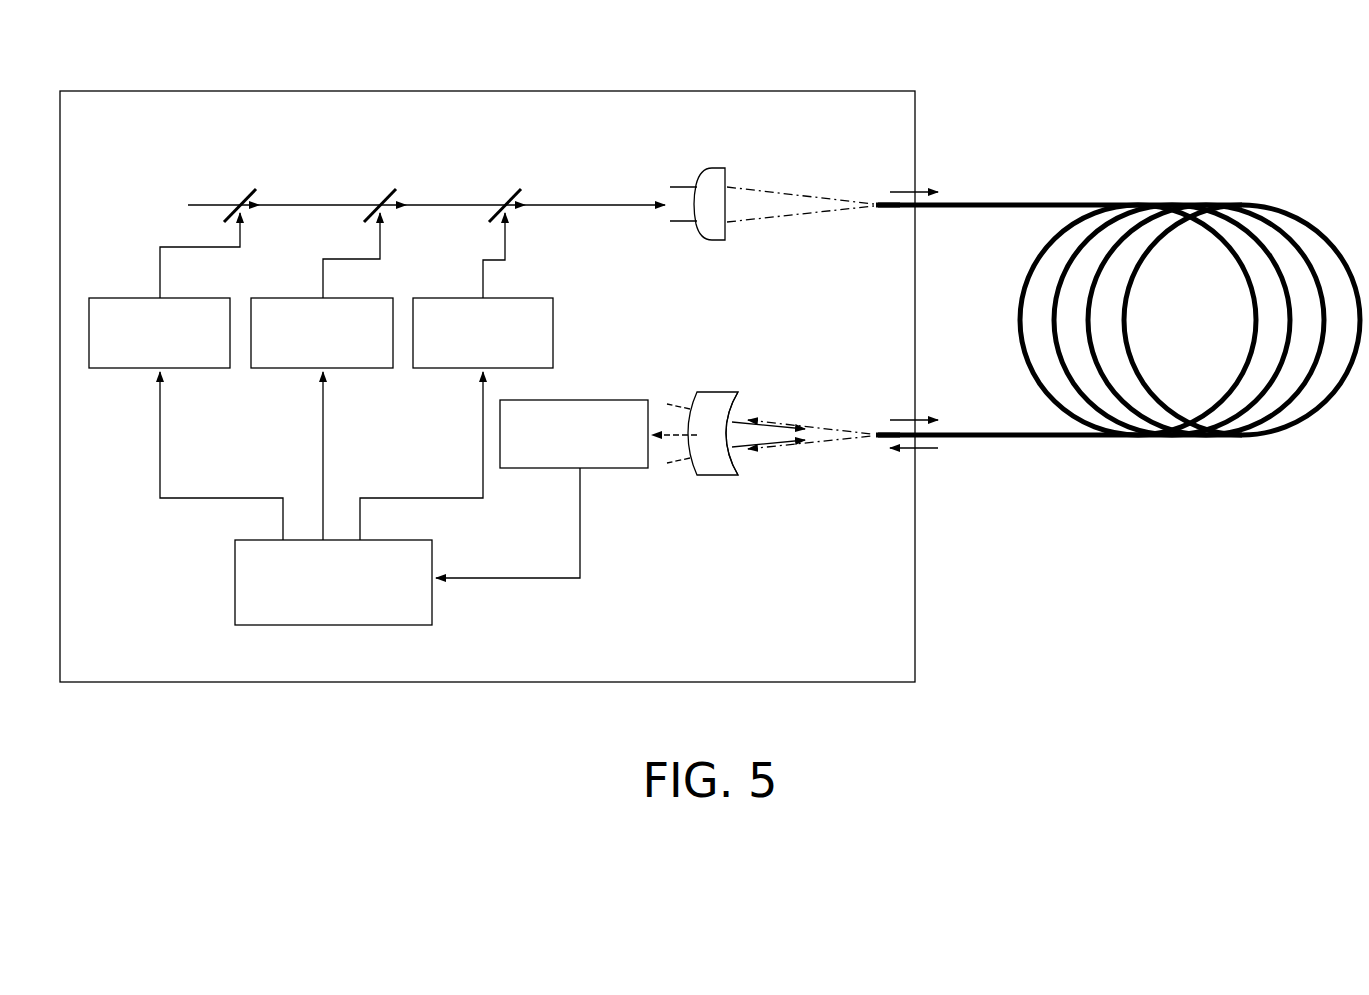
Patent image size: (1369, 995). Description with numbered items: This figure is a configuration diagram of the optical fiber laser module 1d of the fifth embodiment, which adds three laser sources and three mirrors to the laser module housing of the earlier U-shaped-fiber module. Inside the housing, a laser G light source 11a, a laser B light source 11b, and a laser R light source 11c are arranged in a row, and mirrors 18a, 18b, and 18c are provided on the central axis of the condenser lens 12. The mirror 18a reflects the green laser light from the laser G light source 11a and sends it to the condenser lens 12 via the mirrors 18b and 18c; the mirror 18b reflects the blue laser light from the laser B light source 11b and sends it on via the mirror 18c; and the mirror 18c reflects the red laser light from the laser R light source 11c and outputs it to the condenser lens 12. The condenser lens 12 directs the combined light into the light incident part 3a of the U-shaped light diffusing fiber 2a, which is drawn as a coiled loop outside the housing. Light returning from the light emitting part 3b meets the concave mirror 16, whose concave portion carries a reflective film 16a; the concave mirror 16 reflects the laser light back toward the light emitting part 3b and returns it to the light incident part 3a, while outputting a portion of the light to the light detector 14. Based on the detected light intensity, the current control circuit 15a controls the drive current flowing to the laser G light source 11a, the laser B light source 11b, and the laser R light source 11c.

The optical fiber laser module 1d is at (393, 90).
The mirror 18a is at (241, 188).
The mirror 18b is at (381, 188).
The mirror 18c is at (506, 188).
The laser G light source 11a is at (139, 370).
The laser B light source 11b is at (293, 370).
The laser R light source 11c is at (450, 370).
The condenser lens 12 is at (718, 166).
The light detector 14 is at (612, 470).
The current control circuit 15a is at (234, 582).
The concave mirror 16 is at (695, 392).
The reflective film 16a is at (738, 462).
The light incident part 3a is at (873, 200).
The light emitting part 3b is at (873, 430).
The light diffusing fiber 2a is at (993, 201).